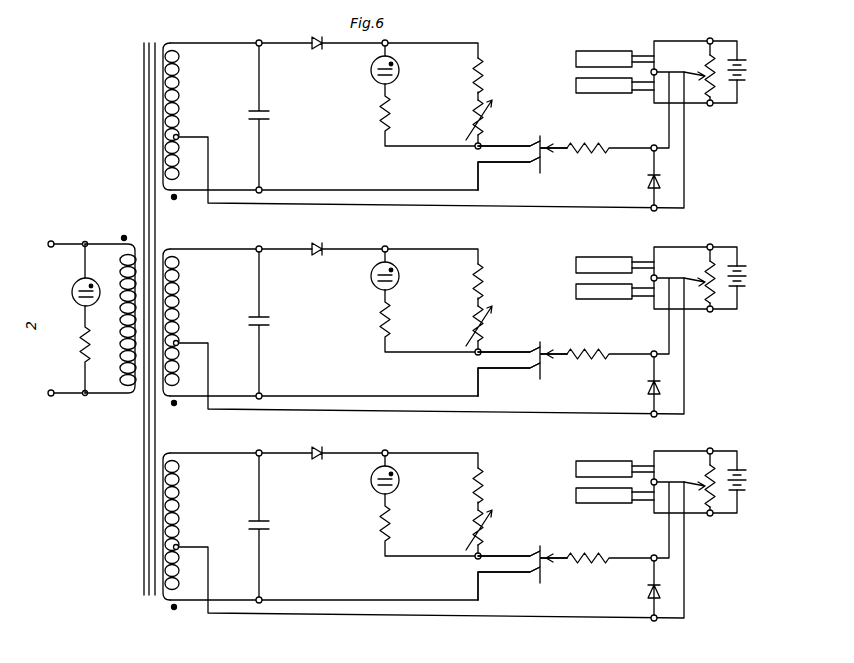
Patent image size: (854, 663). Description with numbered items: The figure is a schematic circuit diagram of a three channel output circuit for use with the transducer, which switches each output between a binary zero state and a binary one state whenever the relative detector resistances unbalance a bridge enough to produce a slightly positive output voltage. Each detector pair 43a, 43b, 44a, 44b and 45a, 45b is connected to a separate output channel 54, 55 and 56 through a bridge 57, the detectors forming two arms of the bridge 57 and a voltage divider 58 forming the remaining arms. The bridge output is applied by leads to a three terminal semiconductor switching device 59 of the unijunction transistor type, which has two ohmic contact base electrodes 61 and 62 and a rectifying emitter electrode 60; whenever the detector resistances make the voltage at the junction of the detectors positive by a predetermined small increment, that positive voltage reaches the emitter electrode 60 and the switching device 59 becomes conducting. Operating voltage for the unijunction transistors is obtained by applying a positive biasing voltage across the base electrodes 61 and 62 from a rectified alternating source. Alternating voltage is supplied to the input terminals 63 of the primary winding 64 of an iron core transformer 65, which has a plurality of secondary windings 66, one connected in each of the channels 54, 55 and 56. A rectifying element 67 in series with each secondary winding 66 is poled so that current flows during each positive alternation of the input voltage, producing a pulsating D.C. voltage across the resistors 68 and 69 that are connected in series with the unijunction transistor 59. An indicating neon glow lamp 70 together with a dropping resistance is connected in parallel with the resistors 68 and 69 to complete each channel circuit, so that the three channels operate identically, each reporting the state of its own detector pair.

The iron core transformer 65 is at (159, 25).
The secondary winding 66 is at (181, 103).
The primary winding 64 is at (131, 396).
The input terminals 63 is at (51, 396).
The rectifying element 67 is at (316, 39).
The indicating neon glow lamp 70 is at (399, 70).
The resistor 68 is at (484, 73).
The resistor 69 is at (472, 116).
The three terminal semiconductor switching device 59 is at (545, 127).
The base electrode 61 is at (531, 142).
The base electrode 62 is at (531, 161).
The emitter electrode 60 is at (548, 154).
The output channel 54 is at (323, 123).
The output channel 55 is at (453, 330).
The output channel 56 is at (453, 534).
The detector 43b is at (604, 56).
The detector 43a is at (612, 90).
The detector 44b is at (615, 254).
The detector 44a is at (615, 303).
The detector 45b is at (615, 458).
The detector 45a is at (615, 507).
The bridge 57 is at (692, 65).
The voltage divider 58 is at (714, 95).